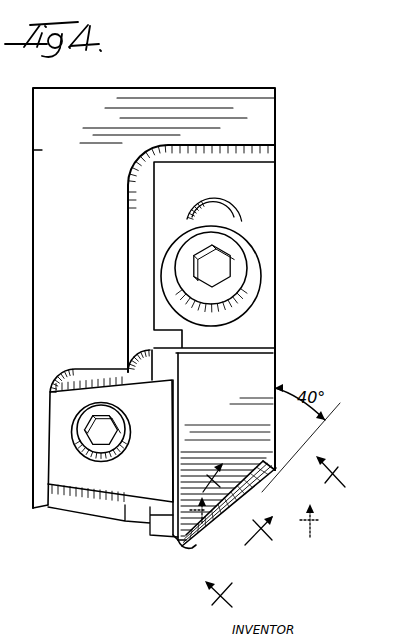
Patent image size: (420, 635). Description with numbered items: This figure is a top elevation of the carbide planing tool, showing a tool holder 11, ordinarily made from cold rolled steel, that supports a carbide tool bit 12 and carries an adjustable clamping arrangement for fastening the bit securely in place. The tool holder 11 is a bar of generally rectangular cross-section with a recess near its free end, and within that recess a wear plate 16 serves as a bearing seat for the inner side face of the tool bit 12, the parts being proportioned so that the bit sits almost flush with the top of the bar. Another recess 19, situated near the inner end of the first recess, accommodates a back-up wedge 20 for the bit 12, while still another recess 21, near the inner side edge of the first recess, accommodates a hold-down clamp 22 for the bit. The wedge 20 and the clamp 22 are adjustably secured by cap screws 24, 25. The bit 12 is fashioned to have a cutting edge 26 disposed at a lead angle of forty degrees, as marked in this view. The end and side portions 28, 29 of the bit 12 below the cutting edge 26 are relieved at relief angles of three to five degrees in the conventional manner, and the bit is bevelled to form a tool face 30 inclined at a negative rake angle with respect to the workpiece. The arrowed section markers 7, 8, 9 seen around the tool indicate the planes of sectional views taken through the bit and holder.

The tool holder 11 is at (263, 110).
The carbide tool bit 12 is at (258, 373).
The wear plate 16 is at (141, 366).
The recess 19 is at (124, 190).
The back-up wedge 20 is at (263, 195).
The recess 21 is at (72, 369).
The hold-down clamp 22 is at (73, 473).
The cap screw 24 is at (237, 262).
The cap screw 25 is at (148, 406).
The cutting edge 26 is at (218, 545).
The end portion of the bit 28 is at (180, 543).
The side portion of the bit 29 is at (277, 492).
The tool face 30 is at (264, 470).
The section line 7- 7 is at (257, 517).
The section line 8- 8 is at (237, 509).
The section line 9- 9 is at (273, 538).